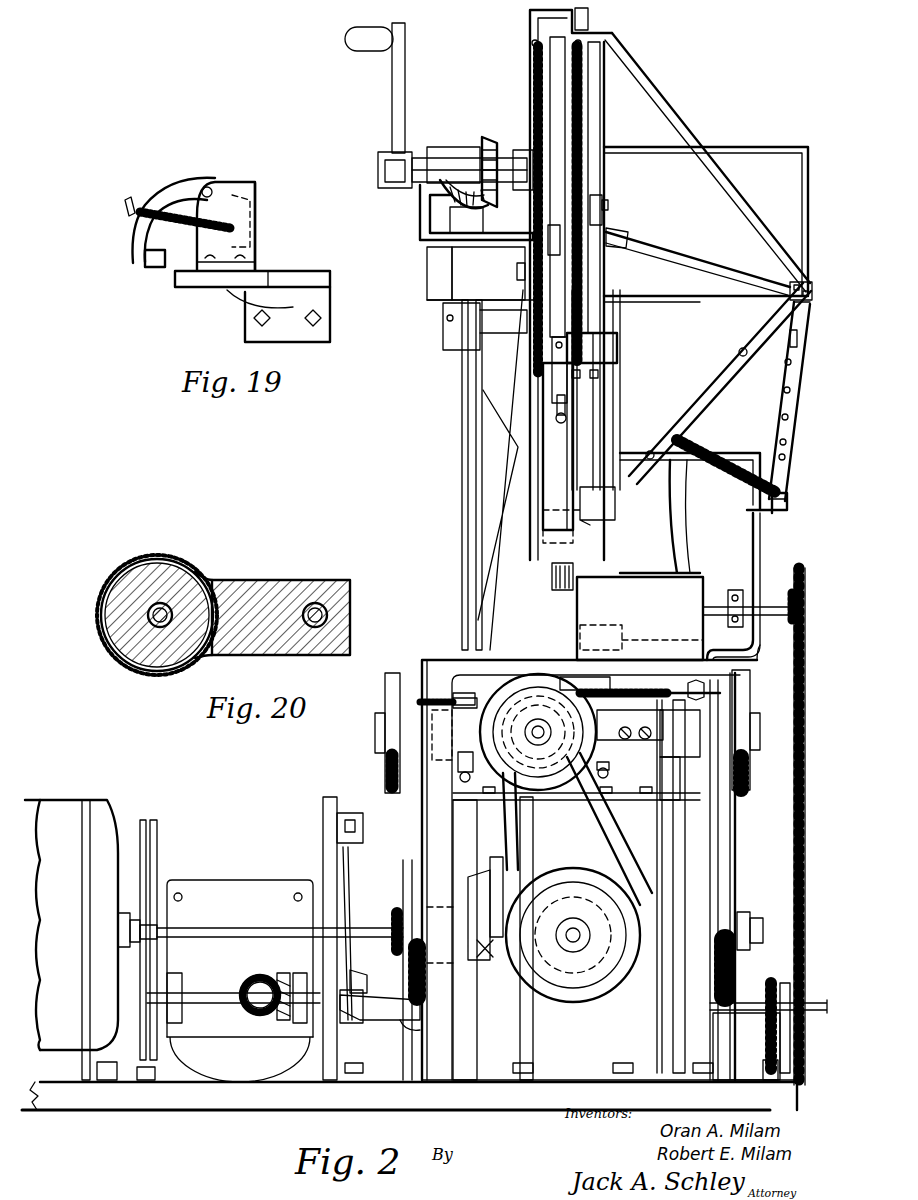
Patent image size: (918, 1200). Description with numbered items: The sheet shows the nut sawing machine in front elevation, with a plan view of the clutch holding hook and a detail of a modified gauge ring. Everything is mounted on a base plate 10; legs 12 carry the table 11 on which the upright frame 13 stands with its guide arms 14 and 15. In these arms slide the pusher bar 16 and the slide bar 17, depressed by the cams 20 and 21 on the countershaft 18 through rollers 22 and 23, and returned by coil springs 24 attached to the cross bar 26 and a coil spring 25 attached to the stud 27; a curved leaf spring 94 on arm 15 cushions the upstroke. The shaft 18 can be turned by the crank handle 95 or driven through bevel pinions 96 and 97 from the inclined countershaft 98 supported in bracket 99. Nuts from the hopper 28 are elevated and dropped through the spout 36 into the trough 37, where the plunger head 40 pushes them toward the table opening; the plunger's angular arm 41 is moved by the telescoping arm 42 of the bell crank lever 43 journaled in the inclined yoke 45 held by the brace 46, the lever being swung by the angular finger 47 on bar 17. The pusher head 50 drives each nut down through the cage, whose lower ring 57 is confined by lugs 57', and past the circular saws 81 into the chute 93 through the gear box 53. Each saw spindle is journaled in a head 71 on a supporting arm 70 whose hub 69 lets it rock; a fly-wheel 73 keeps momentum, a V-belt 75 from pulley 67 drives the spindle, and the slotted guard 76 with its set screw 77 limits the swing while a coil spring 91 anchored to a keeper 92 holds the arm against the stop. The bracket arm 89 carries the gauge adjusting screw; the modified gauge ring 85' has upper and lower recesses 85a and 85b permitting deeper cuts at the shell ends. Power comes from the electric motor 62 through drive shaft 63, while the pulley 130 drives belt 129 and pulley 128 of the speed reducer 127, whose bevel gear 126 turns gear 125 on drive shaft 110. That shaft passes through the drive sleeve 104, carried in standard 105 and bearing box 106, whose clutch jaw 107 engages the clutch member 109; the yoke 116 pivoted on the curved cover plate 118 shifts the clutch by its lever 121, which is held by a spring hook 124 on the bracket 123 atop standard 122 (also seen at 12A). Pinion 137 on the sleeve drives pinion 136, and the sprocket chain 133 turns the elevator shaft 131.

In FIG. 2, the base plate 10 is at (165, 1105).
In FIG. 2, the table 11 is at (437, 658).
In FIG. 2, the legs 12 is at (438, 823).
In FIG. 2, the frame upright bracket 12A is at (340, 827).
In FIG. 2, the upright frame 13 is at (517, 528).
In FIG. 2, the guide arm 14 is at (582, 537).
In FIG. 2, the guide arm 15 is at (613, 337).
In FIG. 2, the pusher bar 16 is at (563, 453).
In FIG. 2, the slide bar 17 is at (598, 277).
In FIG. 2, the countershaft 18 is at (447, 167).
In FIG. 2, the cam 20 is at (593, 70).
In FIG. 2, the cam 21 is at (555, 62).
In FIG. 2, the roller 22 is at (552, 227).
In FIG. 2, the roller 23 is at (600, 210).
In FIG. 2, the coil springs 24 is at (533, 83).
In FIG. 2, the coil spring 25 is at (592, 137).
In FIG. 2, the cross bar 26 is at (550, 375).
In FIG. 2, the stud 27 is at (612, 372).
In FIG. 2, the hopper 28 is at (755, 153).
In FIG. 2, the spout 36 is at (675, 508).
In FIG. 2, the V-shaped trough 37 is at (683, 600).
In FIG. 2, the plunger head 40 is at (597, 623).
In FIG. 2, the angular arm 41 is at (748, 530).
In FIG. 2, the telescoping arm 42 is at (778, 375).
In FIG. 2, the bell crank lever 43 is at (683, 260).
In FIG. 2, the inclined yoke 45 is at (712, 380).
In FIG. 2, the brace 46 is at (680, 110).
In FIG. 2, the angular finger 47 is at (615, 240).
In FIG. 2, the pusher head 50 is at (557, 590).
In FIG. 2, the gear box 53 is at (497, 1035).
In FIG. 2, the lower ring 57 is at (720, 605).
In FIG. 2, the lugs 57' is at (581, 673).
In FIG. 2, the electric motor 62 is at (62, 812).
In FIG. 2, the drive shaft 63 is at (260, 932).
In FIG. 2, the pulley 67 is at (562, 990).
In FIG. 2, the hub 69 is at (673, 977).
In FIG. 2, the supporting arm 70 is at (580, 823).
In FIG. 2, the head 71 is at (460, 723).
In FIG. 2, the fly-wheel 73 is at (537, 680).
In FIG. 2, the V-belt 75 is at (615, 855).
In FIG. 2, the slotted guard 76 is at (540, 800).
In FIG. 2, the set screw 77 is at (460, 777).
In FIG. 20, the circular saw 81 is at (217, 558).
In FIG. 2, the circular saw 81 is at (603, 717).
In FIG. 20, the upper recess 85a is at (127, 578).
In FIG. 20, the modified gauge ring 85' is at (112, 622).
In FIG. 20, the lower recess 85b is at (128, 658).
In FIG. 2, the bracket arm 89 is at (603, 740).
In FIG. 2, the coil spring 91 is at (633, 688).
In FIG. 2, the keeper 92 is at (700, 680).
In FIG. 2, the chute 93 is at (490, 963).
In FIG. 2, the curved leaf spring 94 is at (563, 390).
In FIG. 2, the crank handle 95 is at (392, 92).
In FIG. 2, the beveled pinion 96 is at (492, 147).
In FIG. 2, the beveled pinion 97 is at (437, 200).
In FIG. 2, the inclined countershaft 98 is at (472, 482).
In FIG. 2, the bracket 99 is at (502, 240).
In FIG. 2, the drive sleeve 104 is at (737, 1020).
In FIG. 2, the standard 105 is at (785, 983).
In FIG. 2, the bearing box 106 is at (420, 1010).
In FIG. 2, the clutch jaw 107 is at (420, 1023).
In FIG. 2, the clutch member 109 is at (373, 1010).
In FIG. 2, the drive shaft 110 is at (210, 1005).
In FIG. 2, the yoke 116 is at (353, 980).
In FIG. 2, the curved cover plate 118 is at (387, 965).
In FIG. 19, the lever 121 is at (153, 268).
In FIG. 2, the lever 121 is at (345, 877).
In FIG. 19, the standard 122 is at (250, 277).
In FIG. 2, the standard 122 is at (337, 1053).
In FIG. 19, the bracket 123 is at (260, 198).
In FIG. 2, the bracket 123 is at (360, 857).
In FIG. 19, the spring hook 124 is at (182, 183).
In FIG. 2, the beveled gear 125 is at (282, 1020).
In FIG. 2, the beveled gear 126 is at (263, 977).
In FIG. 2, the speed reducer 127 is at (235, 897).
In FIG. 2, the pulley 128 is at (157, 827).
In FIG. 2, the belt 129 is at (157, 862).
In FIG. 2, the pulley 130 is at (157, 913).
In FIG. 2, the shaft 131 is at (775, 600).
In FIG. 2, the sprocket chain 133 is at (800, 828).
In FIG. 2, the pinion 136 is at (767, 1070).
In FIG. 2, the pinion 137 is at (768, 983).